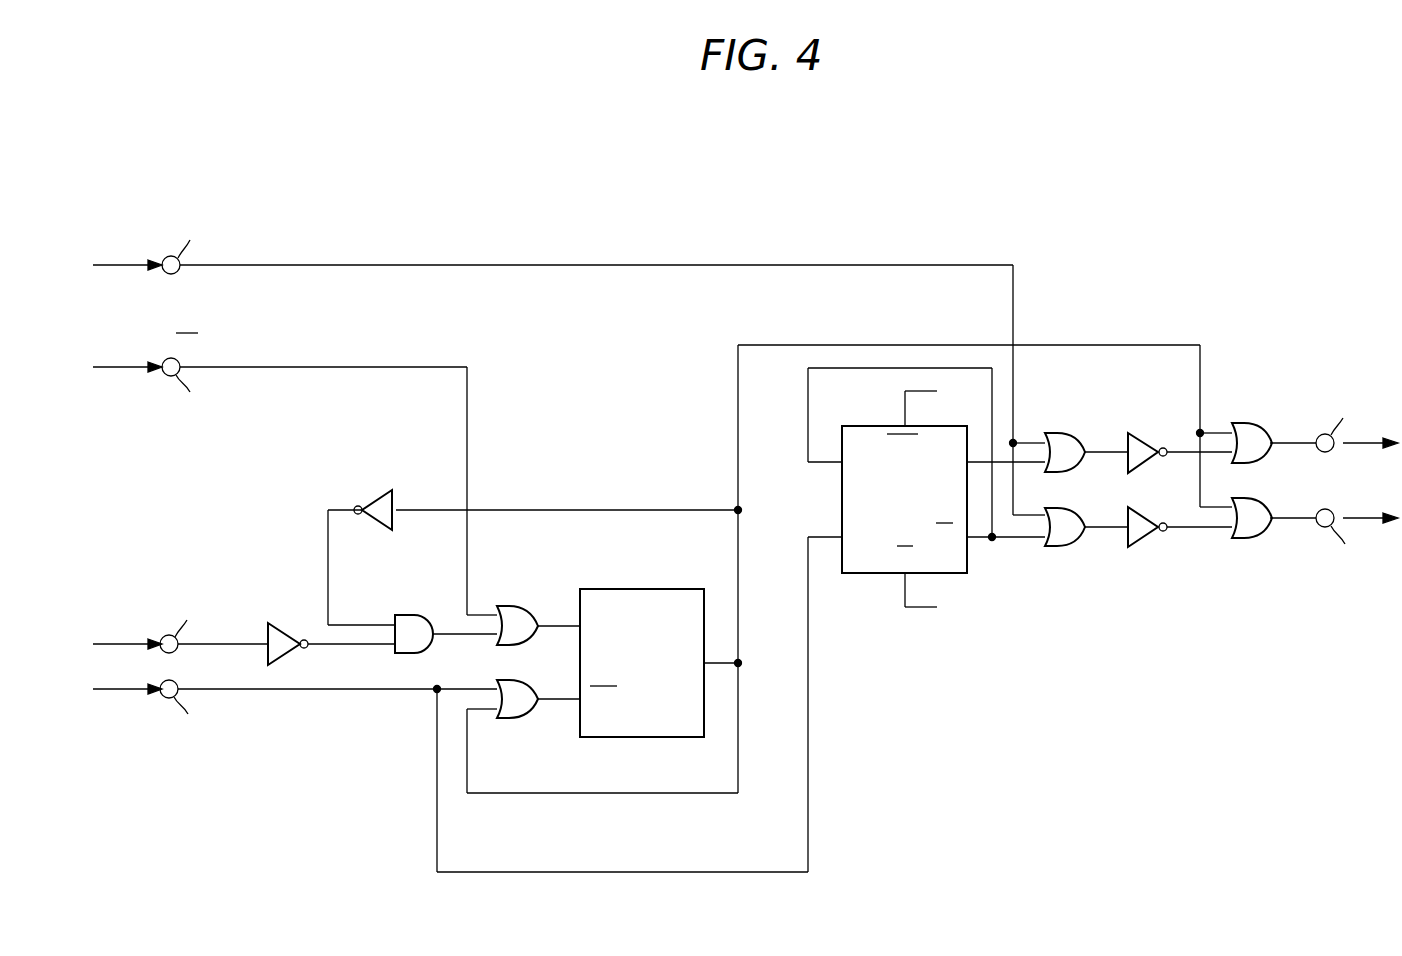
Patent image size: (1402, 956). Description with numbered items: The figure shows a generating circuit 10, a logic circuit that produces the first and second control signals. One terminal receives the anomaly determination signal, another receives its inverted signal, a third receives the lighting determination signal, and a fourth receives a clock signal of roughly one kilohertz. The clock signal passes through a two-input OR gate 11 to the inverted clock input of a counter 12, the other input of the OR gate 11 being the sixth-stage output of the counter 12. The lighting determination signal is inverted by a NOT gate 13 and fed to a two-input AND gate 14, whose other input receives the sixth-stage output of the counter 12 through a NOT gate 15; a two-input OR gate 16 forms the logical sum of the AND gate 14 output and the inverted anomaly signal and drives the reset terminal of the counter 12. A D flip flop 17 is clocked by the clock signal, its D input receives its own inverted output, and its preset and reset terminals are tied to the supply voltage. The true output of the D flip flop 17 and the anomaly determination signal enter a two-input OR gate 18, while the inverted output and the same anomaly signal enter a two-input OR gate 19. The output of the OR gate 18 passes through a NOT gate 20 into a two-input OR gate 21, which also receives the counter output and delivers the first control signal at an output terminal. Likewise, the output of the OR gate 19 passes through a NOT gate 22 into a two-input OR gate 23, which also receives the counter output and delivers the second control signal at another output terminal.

The generating circuit 10 is at (828, 230).
The 2-input OR gate 11 is at (506, 722).
The counter 12 is at (644, 589).
The NOT gate 13 is at (288, 631).
The 2-input AND gate 14 is at (408, 614).
The NOT gate 15 is at (371, 494).
The 2-input OR gate 16 is at (506, 606).
The D flip flop 17 is at (855, 426).
The 2-input OR gate 18 is at (1054, 432).
The 2-input OR gate 19 is at (1052, 547).
The NOT gate 20 is at (1148, 434).
The 2-input OR gate 21 is at (1240, 423).
The NOT gate 22 is at (1144, 539).
The 2-input OR gate 23 is at (1243, 541).